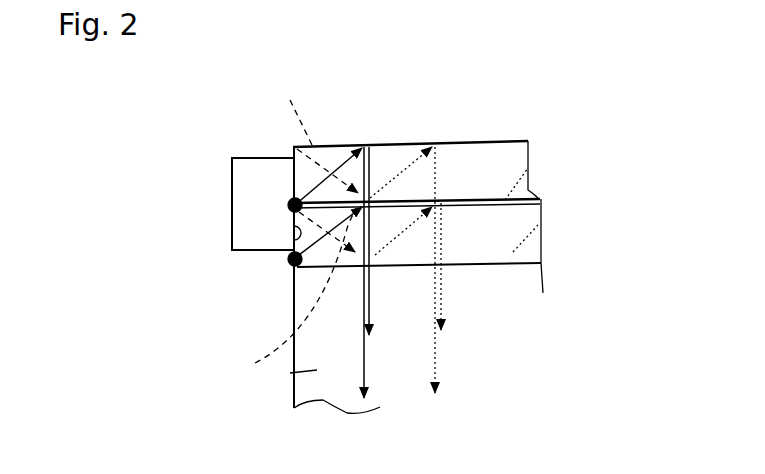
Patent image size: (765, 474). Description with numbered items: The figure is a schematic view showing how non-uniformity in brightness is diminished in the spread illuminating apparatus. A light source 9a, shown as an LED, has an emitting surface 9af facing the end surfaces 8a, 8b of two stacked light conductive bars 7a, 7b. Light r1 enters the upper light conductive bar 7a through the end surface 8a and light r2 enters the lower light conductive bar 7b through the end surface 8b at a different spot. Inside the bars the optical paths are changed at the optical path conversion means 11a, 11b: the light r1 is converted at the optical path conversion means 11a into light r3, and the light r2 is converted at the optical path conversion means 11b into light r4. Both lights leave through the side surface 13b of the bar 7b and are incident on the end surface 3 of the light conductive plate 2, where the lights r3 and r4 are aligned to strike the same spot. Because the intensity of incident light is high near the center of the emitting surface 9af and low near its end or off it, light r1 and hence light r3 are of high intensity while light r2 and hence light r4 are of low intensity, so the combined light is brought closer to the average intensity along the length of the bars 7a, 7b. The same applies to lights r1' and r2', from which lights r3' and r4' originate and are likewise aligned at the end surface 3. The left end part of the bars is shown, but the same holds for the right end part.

The light conductive plate 2 is at (297, 375).
The end surface 3 is at (530, 258).
The light conductive bar 7a is at (510, 167).
The light conductive bar 7b is at (525, 212).
The end surface 8a is at (292, 149).
The end surface 8b is at (295, 262).
The light source 9a is at (232, 175).
The emitting surface 9af is at (290, 240).
The optical path conversion means 11a is at (453, 141).
The optical path conversion means 11b is at (474, 198).
The side surface 13b is at (487, 265).
The light r1 is at (328, 135).
The light r1' is at (281, 297).
The light r2 is at (284, 279).
The light r2' is at (313, 129).
The light r3 is at (388, 308).
The light r3' is at (449, 307).
The light r4 is at (335, 308).
The light r4' is at (456, 335).